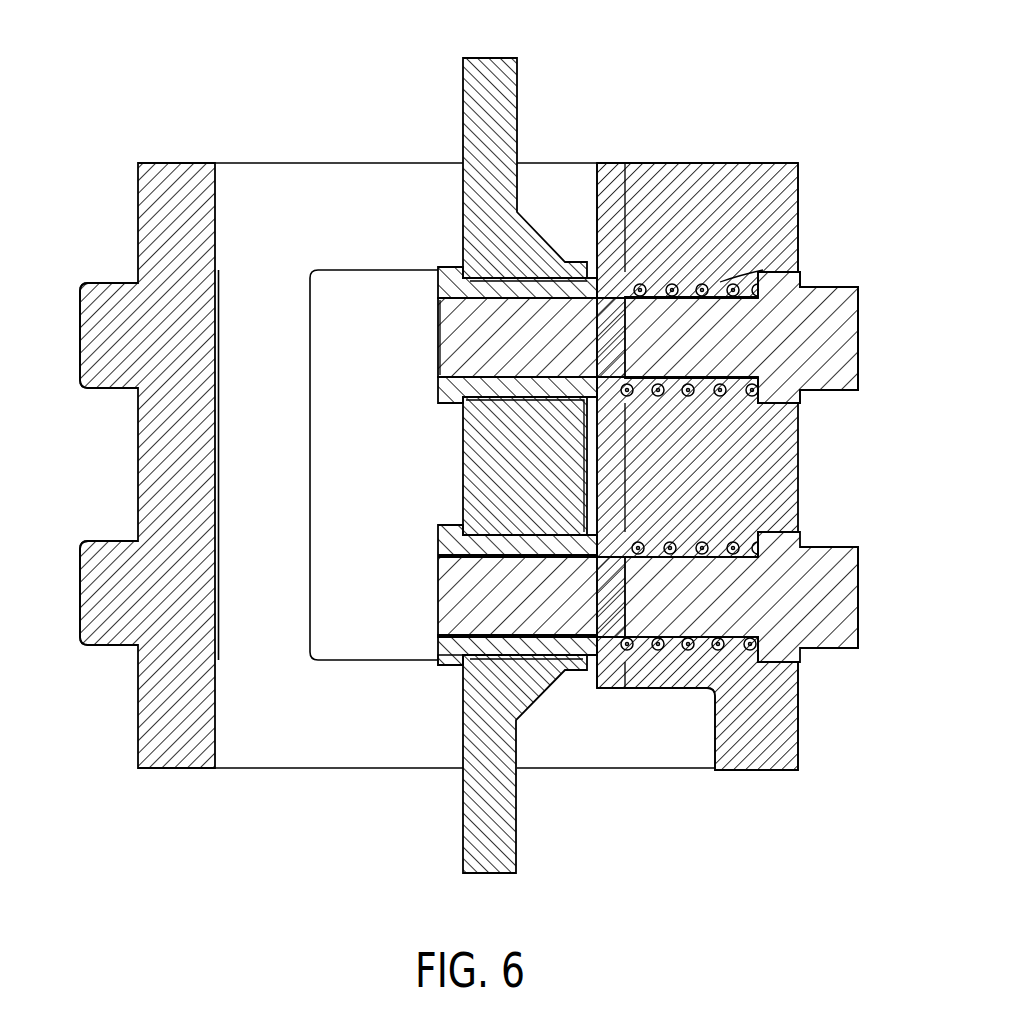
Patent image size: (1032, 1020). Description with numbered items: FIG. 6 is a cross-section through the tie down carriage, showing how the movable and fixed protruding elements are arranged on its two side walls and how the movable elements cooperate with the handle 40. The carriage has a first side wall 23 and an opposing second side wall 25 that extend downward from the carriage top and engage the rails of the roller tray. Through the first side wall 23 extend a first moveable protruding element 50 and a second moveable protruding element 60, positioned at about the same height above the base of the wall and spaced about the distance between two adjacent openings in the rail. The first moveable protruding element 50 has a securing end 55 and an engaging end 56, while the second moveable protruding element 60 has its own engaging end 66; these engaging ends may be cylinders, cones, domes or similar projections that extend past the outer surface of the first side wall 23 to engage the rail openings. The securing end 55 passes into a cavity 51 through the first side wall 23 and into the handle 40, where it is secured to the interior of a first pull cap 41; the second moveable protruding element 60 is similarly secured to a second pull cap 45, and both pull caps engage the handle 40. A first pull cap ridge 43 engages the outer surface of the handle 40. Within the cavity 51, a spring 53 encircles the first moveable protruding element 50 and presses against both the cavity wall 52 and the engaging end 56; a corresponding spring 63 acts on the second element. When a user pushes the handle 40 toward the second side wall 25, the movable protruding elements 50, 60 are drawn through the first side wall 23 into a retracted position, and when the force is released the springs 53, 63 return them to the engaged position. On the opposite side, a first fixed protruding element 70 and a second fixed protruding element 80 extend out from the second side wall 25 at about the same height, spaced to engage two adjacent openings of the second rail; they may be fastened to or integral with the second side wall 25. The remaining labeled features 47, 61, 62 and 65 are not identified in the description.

The first side wall 23 is at (706, 176).
The second side wall 25 is at (170, 178).
The handle 40 is at (486, 64).
The first pull cap 41 is at (445, 603).
The first pull cap ridge 43 is at (440, 660).
The second pull cap 45 is at (445, 320).
The ring 47 is at (445, 285).
The first moveable protruding element 50 is at (855, 648).
The cavity 51 is at (737, 650).
The cavity wall 52 is at (621, 690).
The spring 53 is at (688, 652).
The securing end 55 is at (450, 621).
The engaging end 56 is at (838, 585).
The second moveable protruding element 60 is at (850, 290).
The housing side wall 61 is at (790, 245).
The inner wall 62 is at (622, 296).
The spring 63 is at (703, 290).
The bore 65 is at (455, 352).
The engaging end 66 is at (845, 378).
The first fixed protruding element 70 is at (90, 592).
The second fixed protruding element 80 is at (90, 332).